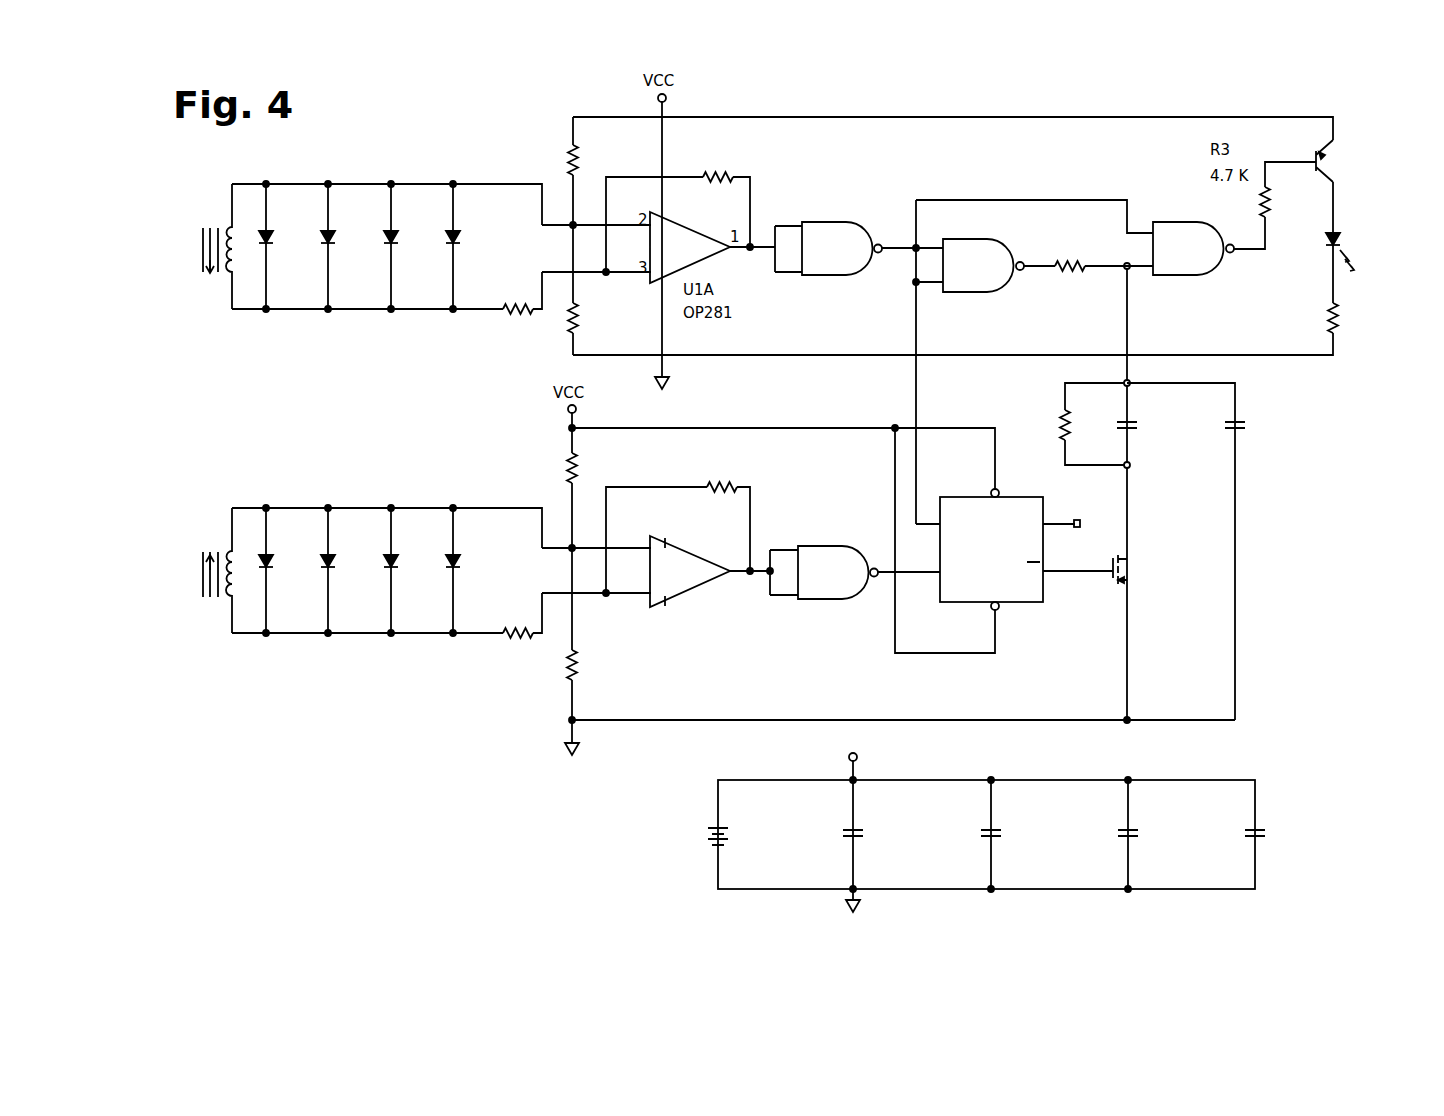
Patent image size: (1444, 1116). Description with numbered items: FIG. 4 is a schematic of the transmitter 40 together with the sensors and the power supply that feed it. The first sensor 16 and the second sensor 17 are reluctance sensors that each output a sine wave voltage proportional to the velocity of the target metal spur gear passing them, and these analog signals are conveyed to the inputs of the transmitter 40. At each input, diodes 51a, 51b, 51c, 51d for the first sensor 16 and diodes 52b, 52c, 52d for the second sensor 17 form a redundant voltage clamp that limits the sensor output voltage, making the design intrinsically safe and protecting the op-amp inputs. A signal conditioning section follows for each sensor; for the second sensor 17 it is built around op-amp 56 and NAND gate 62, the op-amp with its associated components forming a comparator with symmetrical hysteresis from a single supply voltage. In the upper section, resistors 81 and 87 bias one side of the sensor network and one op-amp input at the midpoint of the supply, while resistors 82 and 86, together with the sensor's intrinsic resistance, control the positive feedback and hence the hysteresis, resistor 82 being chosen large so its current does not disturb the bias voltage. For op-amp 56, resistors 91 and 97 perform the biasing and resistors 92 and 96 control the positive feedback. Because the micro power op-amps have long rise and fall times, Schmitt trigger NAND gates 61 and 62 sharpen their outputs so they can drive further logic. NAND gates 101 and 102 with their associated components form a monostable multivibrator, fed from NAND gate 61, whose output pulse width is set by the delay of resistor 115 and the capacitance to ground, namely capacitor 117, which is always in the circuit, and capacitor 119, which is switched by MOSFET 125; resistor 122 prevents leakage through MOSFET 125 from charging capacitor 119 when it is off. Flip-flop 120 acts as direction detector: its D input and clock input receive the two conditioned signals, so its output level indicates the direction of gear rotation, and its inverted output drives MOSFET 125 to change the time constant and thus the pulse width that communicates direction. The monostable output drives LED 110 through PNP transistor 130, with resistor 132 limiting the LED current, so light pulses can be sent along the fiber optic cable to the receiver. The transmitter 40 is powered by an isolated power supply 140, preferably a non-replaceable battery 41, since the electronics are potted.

The transmitter 40 is at (416, 120).
The first sensor 16 is at (204, 228).
The second sensor 17 is at (204, 562).
The diode 51a is at (270, 237).
The diode 51b is at (332, 237).
The diode 51c is at (397, 237).
The diode 51d is at (460, 237).
The diode 52b is at (270, 561).
The diode 52c is at (397, 561).
The diode 52d is at (460, 561).
The resistor 81 is at (571, 145).
The resistor 82 is at (710, 170).
The resistor 86 is at (528, 305).
The resistor 87 is at (575, 335).
The resistor 91 is at (571, 460).
The resistor 92 is at (708, 486).
The resistor 96 is at (528, 629).
The resistor 97 is at (574, 682).
The op-amp 56 is at (685, 547).
The NAND gate 61 is at (856, 222).
The NAND gate 62 is at (830, 605).
The NAND gate 101 is at (1013, 283).
The NAND gate 102 is at (1225, 270).
The resistor 115 is at (1069, 272).
The LED 110 is at (1325, 238).
The PNP transistor 130 is at (1320, 150).
The resistor 132 is at (1330, 305).
The direction flip-flop 120 is at (970, 496).
The resistor 122 is at (1062, 441).
The capacitor 119 is at (1131, 425).
The capacitor 117 is at (1238, 425).
The MOSFET 125 is at (1108, 560).
The power supply circuit 140 is at (712, 770).
The battery 41 is at (708, 829).